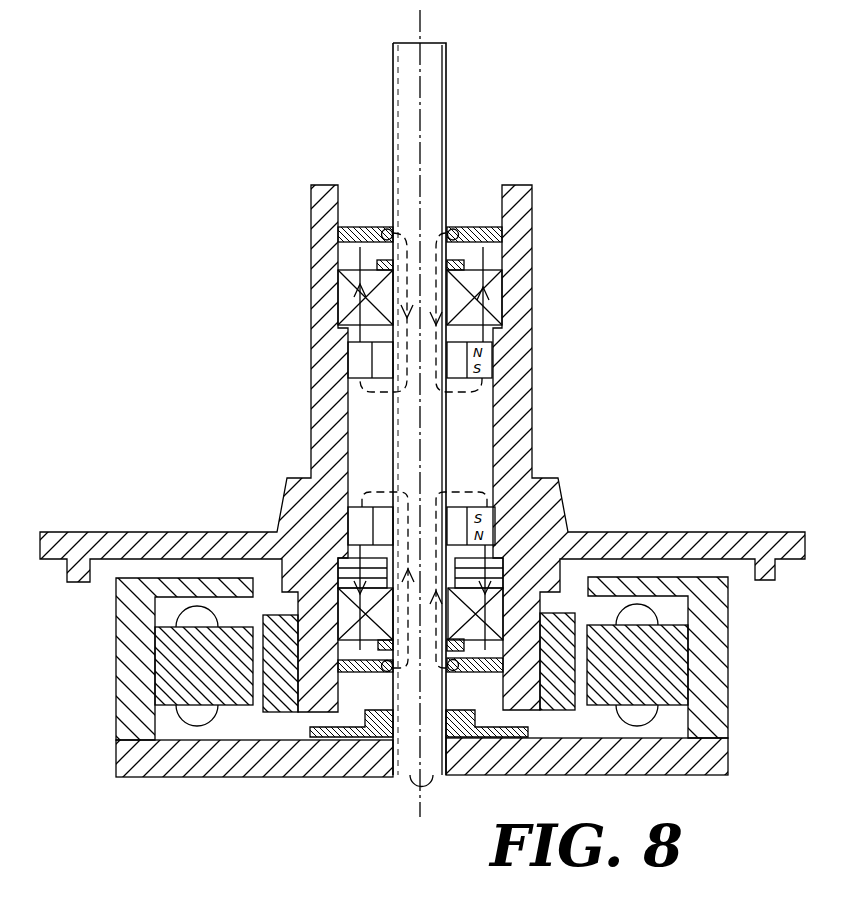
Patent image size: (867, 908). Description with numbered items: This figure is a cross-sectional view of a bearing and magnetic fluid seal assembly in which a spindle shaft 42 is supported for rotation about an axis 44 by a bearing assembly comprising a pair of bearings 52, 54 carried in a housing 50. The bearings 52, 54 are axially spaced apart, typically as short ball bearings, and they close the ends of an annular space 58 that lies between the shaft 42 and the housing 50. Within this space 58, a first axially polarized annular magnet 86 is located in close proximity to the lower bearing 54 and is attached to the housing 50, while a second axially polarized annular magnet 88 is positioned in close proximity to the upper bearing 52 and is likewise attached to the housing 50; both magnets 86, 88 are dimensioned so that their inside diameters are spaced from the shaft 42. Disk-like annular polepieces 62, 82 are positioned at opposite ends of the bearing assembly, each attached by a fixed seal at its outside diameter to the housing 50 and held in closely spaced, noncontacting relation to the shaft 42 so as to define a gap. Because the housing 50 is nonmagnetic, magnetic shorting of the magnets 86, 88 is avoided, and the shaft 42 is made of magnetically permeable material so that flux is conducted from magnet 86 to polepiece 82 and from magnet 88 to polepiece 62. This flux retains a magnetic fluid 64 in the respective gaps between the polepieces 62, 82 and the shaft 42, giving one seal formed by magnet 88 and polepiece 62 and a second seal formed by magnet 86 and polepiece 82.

The spindle shaft 42 is at (405, 107).
The axis 44 is at (420, 26).
The housing 50 is at (311, 334).
The bearing 52 is at (346, 296).
The bearing 54 is at (371, 632).
The annular space 58 is at (376, 439).
The polepiece 62 is at (372, 227).
The magnetic fluid 64 is at (456, 227).
The polepiece 82 is at (486, 672).
The first axially polarized annular magnet 86 is at (352, 507).
The second axially polarized annular magnet 88 is at (348, 358).